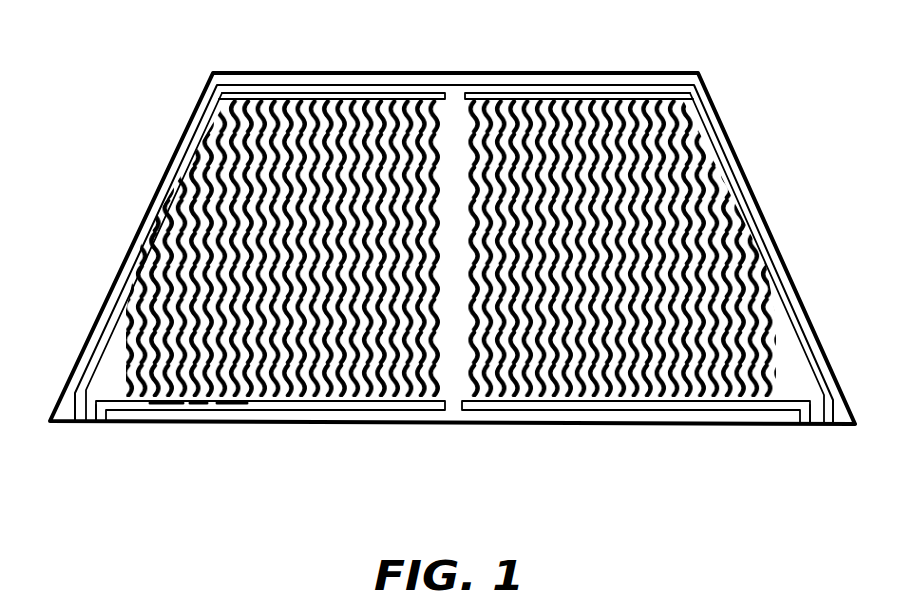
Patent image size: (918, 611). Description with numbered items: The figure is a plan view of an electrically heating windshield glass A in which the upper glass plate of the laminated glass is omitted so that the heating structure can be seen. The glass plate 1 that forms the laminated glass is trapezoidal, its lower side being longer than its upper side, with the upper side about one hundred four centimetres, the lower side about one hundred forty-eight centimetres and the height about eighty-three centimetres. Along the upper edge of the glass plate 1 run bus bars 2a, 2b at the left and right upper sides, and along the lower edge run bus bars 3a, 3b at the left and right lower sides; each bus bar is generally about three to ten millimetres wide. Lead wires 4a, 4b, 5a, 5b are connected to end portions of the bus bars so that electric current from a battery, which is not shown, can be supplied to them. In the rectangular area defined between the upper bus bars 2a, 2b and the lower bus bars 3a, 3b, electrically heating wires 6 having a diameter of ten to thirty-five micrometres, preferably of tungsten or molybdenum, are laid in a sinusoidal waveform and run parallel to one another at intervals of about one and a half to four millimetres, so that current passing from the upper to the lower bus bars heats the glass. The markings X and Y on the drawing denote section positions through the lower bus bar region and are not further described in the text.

The electrically heating windshield glass A is at (745, 146).
The glass plate 1 is at (762, 213).
The bus bar 2a is at (323, 97).
The bus bar 2b is at (590, 97).
The bus bar 3a is at (348, 410).
The bus bar 3b is at (605, 410).
The lead wire 4a is at (74, 424).
The lead wire 4b is at (833, 428).
The lead wire 5a is at (101, 424).
The lead wire 5b is at (805, 427).
The electrically heating wires 6 is at (739, 300).
The section line X- X is at (248, 450).
The section line Y- Y is at (398, 450).